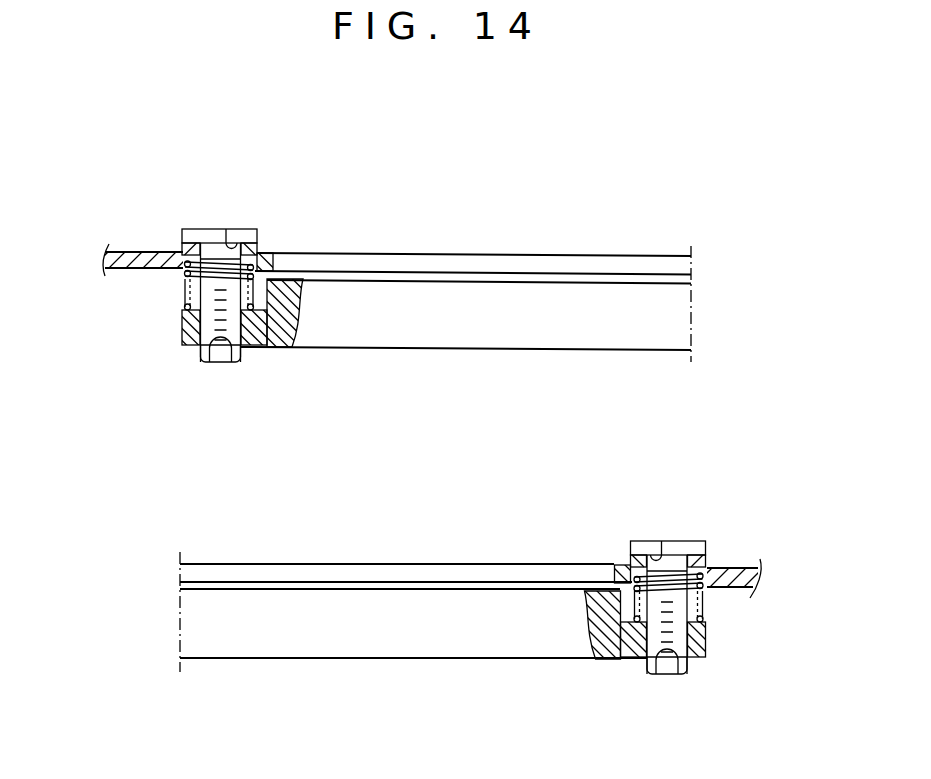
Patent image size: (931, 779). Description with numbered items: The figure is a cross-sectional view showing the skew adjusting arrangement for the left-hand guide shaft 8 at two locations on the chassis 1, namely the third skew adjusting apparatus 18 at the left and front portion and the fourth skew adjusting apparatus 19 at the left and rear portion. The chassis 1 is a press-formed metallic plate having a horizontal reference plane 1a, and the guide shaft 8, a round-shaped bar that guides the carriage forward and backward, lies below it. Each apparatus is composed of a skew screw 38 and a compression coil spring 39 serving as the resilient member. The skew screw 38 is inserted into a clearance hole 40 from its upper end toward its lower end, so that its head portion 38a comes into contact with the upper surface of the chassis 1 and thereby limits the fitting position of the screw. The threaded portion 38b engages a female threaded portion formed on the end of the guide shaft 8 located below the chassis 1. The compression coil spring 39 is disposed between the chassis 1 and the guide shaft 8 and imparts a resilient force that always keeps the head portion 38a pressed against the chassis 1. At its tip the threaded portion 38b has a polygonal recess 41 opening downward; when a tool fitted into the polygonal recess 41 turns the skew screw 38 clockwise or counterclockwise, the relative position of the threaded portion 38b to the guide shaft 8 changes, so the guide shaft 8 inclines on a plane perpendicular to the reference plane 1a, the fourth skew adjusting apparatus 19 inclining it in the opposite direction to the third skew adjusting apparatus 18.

The chassis 1 is at (607, 266).
The horizontal reference plane 1a is at (468, 253).
The guide shaft 8 is at (481, 600).
The third skew adjusting apparatus 18 is at (750, 523).
The fourth skew adjusting apparatus 19 is at (212, 195).
The skew screw 38 is at (257, 229).
The head portion 38a is at (190, 229).
The threaded portion 38b is at (205, 328).
The compression coil spring 39 is at (184, 290).
The clearance hole 40 is at (231, 230).
The polygonal recess 41 is at (224, 363).